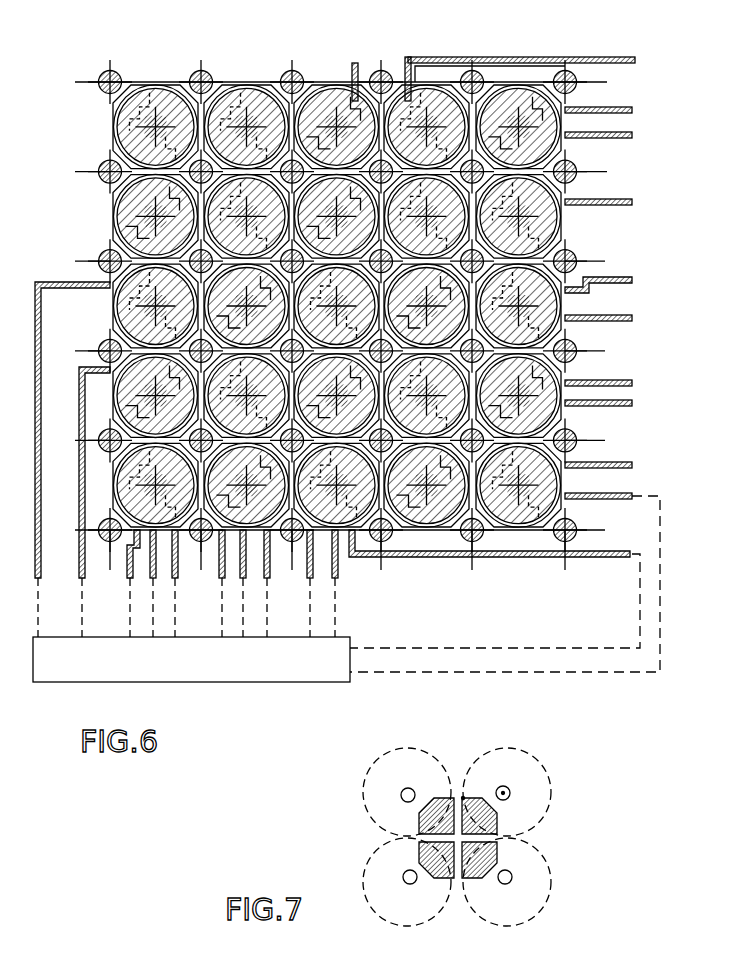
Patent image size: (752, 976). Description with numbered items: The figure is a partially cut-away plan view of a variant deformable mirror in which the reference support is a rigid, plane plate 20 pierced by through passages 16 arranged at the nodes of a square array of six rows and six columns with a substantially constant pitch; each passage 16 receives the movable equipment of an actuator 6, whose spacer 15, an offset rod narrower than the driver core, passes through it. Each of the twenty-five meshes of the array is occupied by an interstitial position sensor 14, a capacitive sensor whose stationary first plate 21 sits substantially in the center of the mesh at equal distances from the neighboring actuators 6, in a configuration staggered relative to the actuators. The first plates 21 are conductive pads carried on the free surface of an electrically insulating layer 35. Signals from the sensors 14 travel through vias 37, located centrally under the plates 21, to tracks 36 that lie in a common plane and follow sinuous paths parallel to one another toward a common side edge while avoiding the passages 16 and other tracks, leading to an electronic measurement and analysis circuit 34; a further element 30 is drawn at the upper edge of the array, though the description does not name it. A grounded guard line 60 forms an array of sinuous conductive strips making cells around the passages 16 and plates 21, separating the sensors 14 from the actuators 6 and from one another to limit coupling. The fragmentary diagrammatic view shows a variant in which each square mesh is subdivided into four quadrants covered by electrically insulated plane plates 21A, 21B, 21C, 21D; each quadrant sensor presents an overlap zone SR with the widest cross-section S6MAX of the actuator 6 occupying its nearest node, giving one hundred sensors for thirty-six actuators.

In FIG. 6, the actuator 6 is at (115, 74).
In FIG. 7, the actuator 6 is at (402, 792).
In FIG. 6, the interstitial position sensor 14 is at (148, 100).
In FIG. 6, the spacer 15 is at (216, 100).
In FIG. 7, the spacer 15 is at (508, 790).
In FIG. 6, the passage 16 is at (102, 70).
In FIG. 7, the passage 16 is at (500, 783).
In FIG. 6, the plate 20 is at (437, 611).
In FIG. 6, the first plate 21 is at (262, 125).
In FIG. 7, the plane plate 21A is at (498, 818).
In FIG. 7, the plane plate 21B is at (420, 818).
In FIG. 7, the plane plate 21C is at (432, 872).
In FIG. 7, the plane plate 21D is at (480, 872).
In FIG. 6, the top conductor 30 is at (548, 18).
In FIG. 6, the electronic measurement and analysis circuit 34 is at (175, 673).
In FIG. 6, the electrically insulating layer 35 is at (642, 97).
In FIG. 6, the tracks 36 is at (628, 140).
In FIG. 6, the vias 37 is at (162, 110).
In FIG. 6, the guard line 60 is at (368, 72).
In FIG. 7, the overlap zone SR is at (463, 796).
In FIG. 7, the widest cross-section of the actuator S6MAX is at (555, 780).